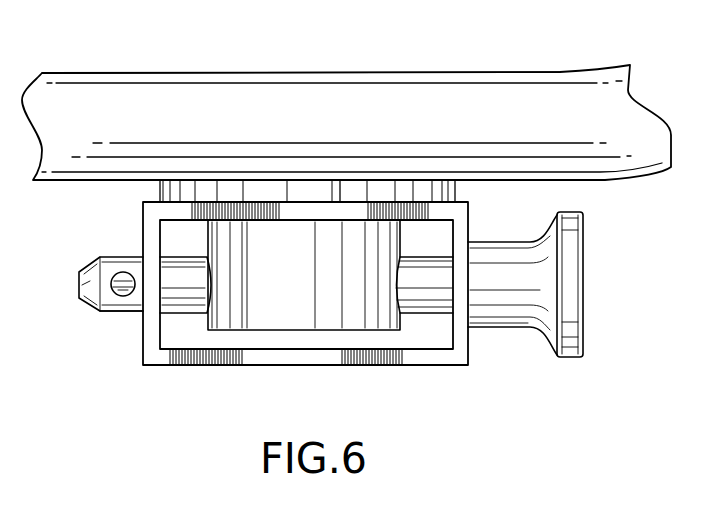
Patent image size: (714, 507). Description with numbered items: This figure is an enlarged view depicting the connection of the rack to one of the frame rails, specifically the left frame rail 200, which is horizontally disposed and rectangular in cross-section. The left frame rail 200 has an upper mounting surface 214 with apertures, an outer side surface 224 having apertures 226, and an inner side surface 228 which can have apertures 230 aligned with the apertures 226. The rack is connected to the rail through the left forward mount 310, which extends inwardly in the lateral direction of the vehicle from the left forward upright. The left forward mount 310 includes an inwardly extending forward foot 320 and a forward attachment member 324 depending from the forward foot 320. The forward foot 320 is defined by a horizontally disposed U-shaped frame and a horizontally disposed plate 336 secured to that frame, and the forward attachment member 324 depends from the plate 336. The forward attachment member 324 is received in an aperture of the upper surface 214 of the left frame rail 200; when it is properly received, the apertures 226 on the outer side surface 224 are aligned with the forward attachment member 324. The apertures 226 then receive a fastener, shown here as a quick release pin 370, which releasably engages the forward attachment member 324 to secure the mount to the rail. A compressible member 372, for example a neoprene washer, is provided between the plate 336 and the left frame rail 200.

The left frame rail 200 is at (299, 315).
The upper mounting surface 214 is at (348, 202).
The outer side surface 224 is at (470, 352).
The apertures 226 is at (470, 236).
The inner side surface 228 is at (142, 349).
The apertures 230 is at (142, 251).
The left forward mount 310 is at (355, 73).
The forward foot 320 is at (231, 75).
The forward attachment member 324 is at (283, 320).
The plate 336 is at (242, 190).
The quick release pin 370 is at (585, 285).
The compressible member 372 is at (270, 203).